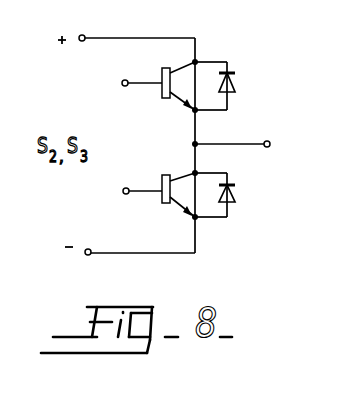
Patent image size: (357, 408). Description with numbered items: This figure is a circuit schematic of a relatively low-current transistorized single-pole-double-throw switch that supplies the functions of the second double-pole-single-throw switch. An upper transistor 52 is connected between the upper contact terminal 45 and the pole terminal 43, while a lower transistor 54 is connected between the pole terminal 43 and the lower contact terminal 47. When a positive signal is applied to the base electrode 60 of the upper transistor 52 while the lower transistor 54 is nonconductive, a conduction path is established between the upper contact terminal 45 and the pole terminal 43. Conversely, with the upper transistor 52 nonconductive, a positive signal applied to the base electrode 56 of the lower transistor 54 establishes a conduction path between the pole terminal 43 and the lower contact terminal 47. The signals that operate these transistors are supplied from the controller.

The upper contact terminal 45 is at (80, 41).
The upper transistor 52 is at (158, 68).
The base electrode 60 is at (125, 86).
The pole terminal 43 is at (269, 141).
The lower transistor 54 is at (160, 176).
The base electrode 56 is at (123, 193).
The lower contact terminal 47 is at (85, 254).